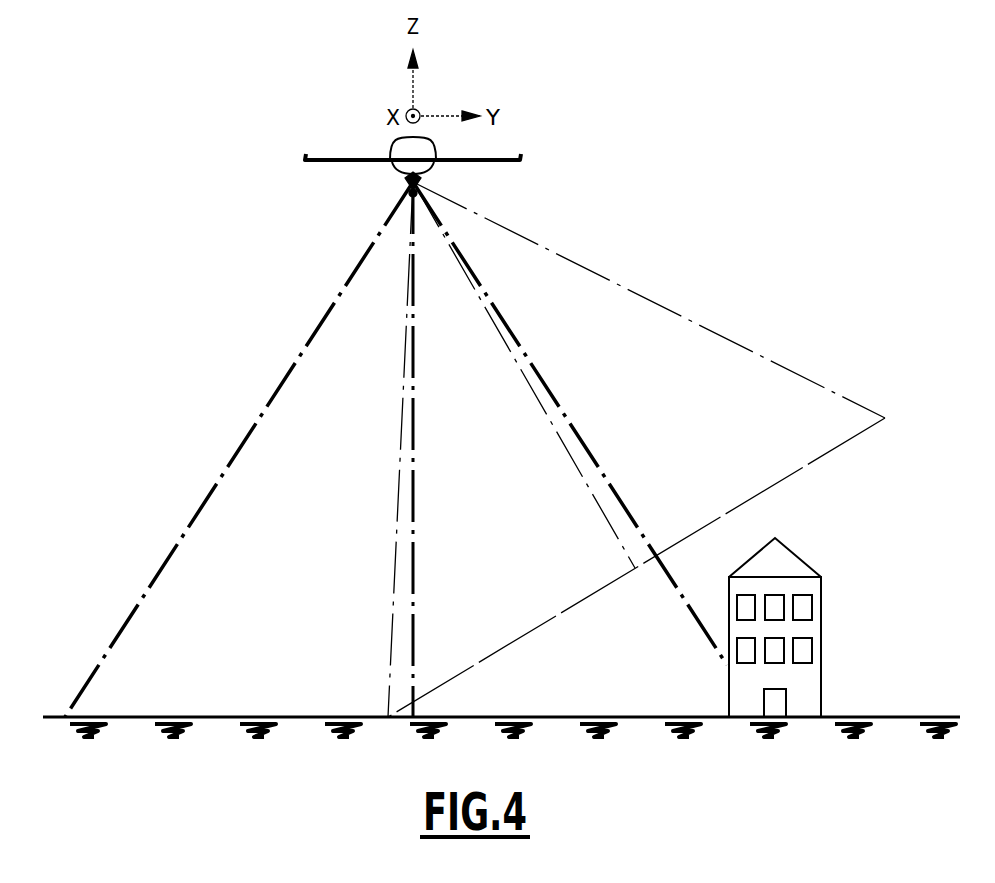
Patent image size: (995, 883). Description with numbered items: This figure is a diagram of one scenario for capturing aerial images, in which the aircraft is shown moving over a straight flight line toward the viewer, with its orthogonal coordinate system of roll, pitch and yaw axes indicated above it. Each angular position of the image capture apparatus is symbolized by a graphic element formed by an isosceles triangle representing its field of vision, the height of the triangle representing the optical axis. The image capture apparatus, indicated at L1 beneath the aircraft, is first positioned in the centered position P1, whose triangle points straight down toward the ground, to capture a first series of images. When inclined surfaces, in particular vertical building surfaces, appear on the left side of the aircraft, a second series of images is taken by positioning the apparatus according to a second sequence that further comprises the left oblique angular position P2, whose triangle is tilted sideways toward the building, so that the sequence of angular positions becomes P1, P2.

The camera / image capture device of the drone L1 is at (405, 190).
The centered position P1 is at (240, 447).
The left oblique angular position P2 is at (728, 340).